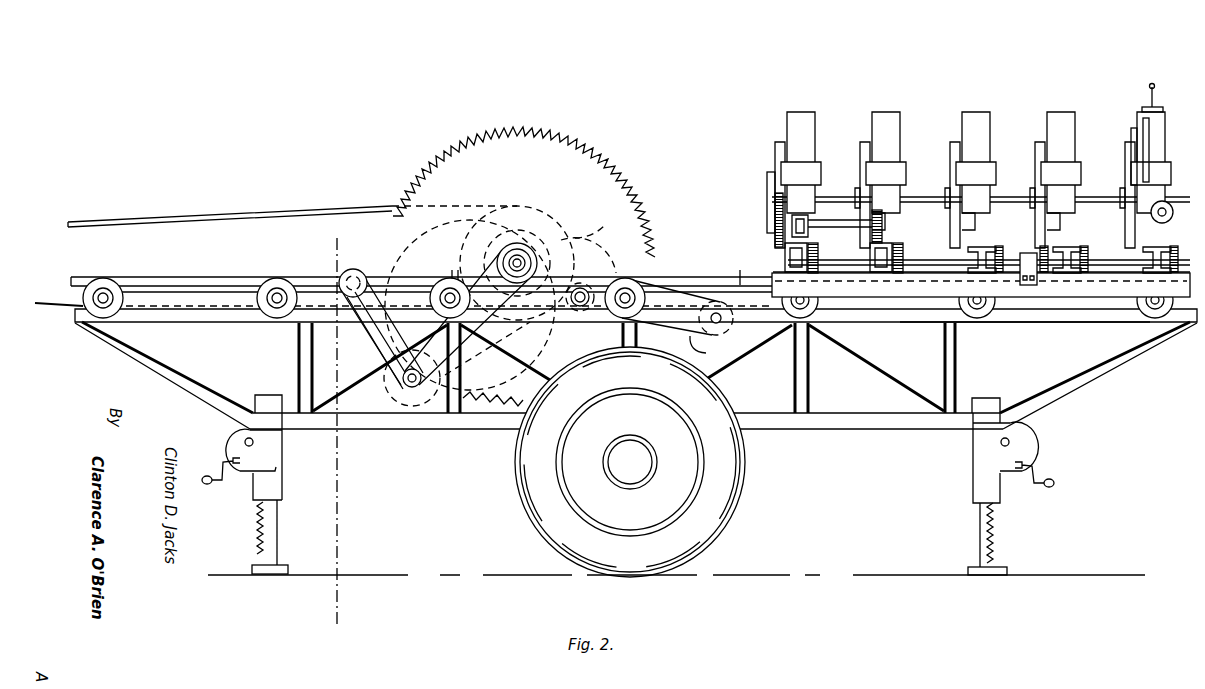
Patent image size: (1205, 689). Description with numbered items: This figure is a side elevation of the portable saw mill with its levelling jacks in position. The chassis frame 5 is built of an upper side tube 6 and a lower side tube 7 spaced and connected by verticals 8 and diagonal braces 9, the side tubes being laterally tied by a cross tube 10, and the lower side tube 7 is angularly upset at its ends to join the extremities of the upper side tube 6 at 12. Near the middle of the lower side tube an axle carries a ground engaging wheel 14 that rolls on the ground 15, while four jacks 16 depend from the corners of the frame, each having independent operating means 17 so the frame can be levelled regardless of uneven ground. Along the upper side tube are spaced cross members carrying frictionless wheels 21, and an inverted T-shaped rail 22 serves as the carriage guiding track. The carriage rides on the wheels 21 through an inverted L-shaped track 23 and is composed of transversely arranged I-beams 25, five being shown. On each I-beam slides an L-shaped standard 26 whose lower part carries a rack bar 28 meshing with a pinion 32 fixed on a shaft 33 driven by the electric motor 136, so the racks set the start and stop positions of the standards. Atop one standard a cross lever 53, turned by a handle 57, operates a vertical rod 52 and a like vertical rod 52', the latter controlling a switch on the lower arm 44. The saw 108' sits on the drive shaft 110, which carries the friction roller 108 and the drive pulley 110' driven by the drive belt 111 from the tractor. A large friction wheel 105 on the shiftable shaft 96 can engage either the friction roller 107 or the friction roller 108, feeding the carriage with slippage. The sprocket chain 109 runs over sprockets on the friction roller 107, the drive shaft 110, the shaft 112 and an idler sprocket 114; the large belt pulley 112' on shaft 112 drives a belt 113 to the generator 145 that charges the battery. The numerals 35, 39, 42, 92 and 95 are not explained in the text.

The chassis frame 5 is at (1160, 364).
The upper side tube 6 is at (1023, 323).
The lower side tube 7 is at (880, 420).
The vertical 8 is at (943, 350).
The diagonal brace 9 is at (864, 360).
The cross tube 10 is at (352, 244).
The joint of lower and upper side tubes 12 is at (84, 328).
The ground engaging wheel 14 is at (738, 500).
The ground 15 is at (770, 575).
The jack 16 is at (289, 481).
The operating means 17 is at (1046, 472).
The frictionless wheel 21 is at (111, 283).
The inverted T-shaped rail 22 is at (197, 279).
The inverted L-shaped track 23 is at (1097, 298).
The I-beam 25 is at (1128, 298).
The L-shaped standard or knee 26 is at (820, 121).
The rack bar 28 is at (1080, 247).
The pinion 32 is at (998, 259).
The shaft 33 is at (1103, 262).
The small gear 35 is at (1170, 205).
The upper shaft 39 is at (1098, 197).
The upright bar 42 is at (950, 150).
The lower arm 44 is at (1053, 227).
The vertical rod 52 is at (1171, 150).
The vertical rod 52' is at (1117, 152).
The cross lever 53 is at (1163, 107).
The handle 57 is at (1155, 86).
The drive pulley 92 is at (717, 316).
The belt guard 95 is at (701, 346).
The shaft 96 is at (625, 266).
The large friction wheel 105 is at (607, 253).
The friction roller 107 is at (671, 307).
The friction roller 108 is at (484, 281).
The saw 108' is at (527, 223).
The sprocket chain 109 is at (455, 274).
The drive shaft 110 is at (479, 263).
The drive pulley 110' is at (595, 237).
The drive belt 111 is at (293, 214).
The shaft 112 is at (446, 354).
The large belt pulley 112' is at (412, 411).
The belt 113 is at (358, 343).
The idler sprocket 114 is at (487, 364).
The electric motor 136 is at (1036, 280).
The generator 145 is at (340, 272).